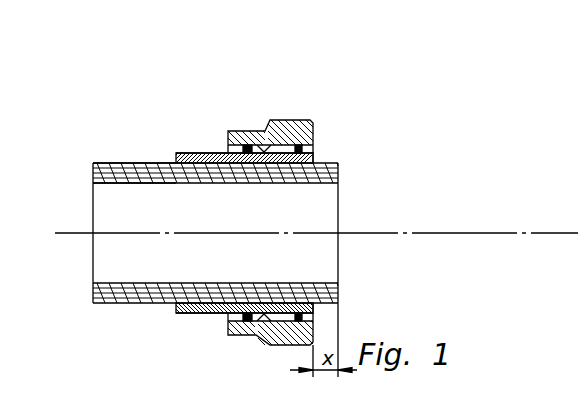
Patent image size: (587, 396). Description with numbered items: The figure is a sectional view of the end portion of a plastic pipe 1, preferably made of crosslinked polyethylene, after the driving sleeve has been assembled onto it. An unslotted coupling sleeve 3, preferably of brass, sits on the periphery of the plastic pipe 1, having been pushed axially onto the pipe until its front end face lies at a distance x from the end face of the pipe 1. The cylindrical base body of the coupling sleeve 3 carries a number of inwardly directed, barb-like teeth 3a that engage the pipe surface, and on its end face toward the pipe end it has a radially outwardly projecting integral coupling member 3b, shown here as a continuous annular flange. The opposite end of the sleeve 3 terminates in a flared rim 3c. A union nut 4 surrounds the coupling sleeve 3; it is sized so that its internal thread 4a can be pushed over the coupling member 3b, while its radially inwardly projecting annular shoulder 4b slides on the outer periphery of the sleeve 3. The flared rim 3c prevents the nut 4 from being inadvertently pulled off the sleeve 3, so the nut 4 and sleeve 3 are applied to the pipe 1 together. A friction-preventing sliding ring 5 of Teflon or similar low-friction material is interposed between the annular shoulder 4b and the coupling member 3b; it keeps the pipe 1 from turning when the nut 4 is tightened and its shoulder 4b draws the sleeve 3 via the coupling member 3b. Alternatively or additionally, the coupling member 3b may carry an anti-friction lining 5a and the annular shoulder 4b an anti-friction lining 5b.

The plastic pipe 1 is at (338, 175).
The coupling sleeve 3 is at (172, 152).
The barb-like teeth 3a is at (142, 165).
The coupling member 3b is at (313, 157).
The flared rim 3c is at (185, 312).
The union nut 4 is at (343, 191).
The internal thread 4a is at (248, 130).
The annular shoulder 4b is at (228, 140).
The sliding ring 5 is at (351, 226).
The anti-friction lining 5a is at (288, 132).
The anti-friction lining 5b is at (258, 322).